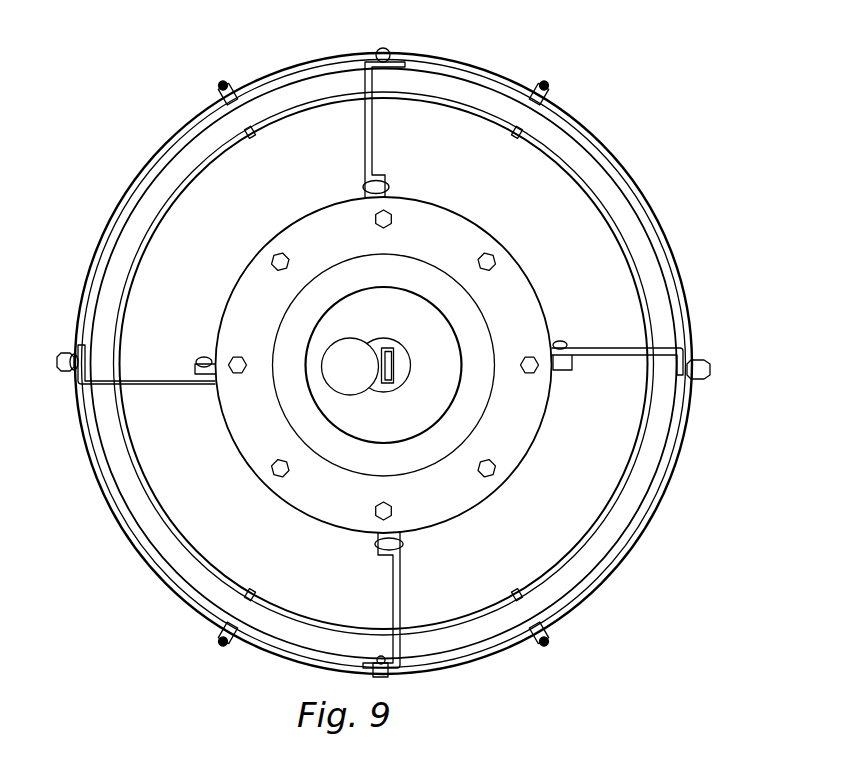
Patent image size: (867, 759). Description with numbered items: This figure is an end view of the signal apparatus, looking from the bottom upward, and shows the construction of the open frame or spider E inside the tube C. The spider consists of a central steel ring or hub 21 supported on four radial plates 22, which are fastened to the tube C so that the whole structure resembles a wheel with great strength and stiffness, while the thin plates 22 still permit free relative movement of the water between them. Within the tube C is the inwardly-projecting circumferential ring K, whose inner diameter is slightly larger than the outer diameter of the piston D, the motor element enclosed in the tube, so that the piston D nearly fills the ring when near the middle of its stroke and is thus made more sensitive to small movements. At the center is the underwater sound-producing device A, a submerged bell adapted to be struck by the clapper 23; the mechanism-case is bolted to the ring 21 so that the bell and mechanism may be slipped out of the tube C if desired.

The tube C is at (83, 292).
The piston D is at (384, 363).
The open frame or spider E is at (367, 353).
The circumferential ring K is at (594, 553).
The underwater sound-producing device A is at (399, 365).
The steel ring or hub 21 is at (527, 437).
The radial plates 22 is at (370, 155).
The clapper 23 is at (350, 366).